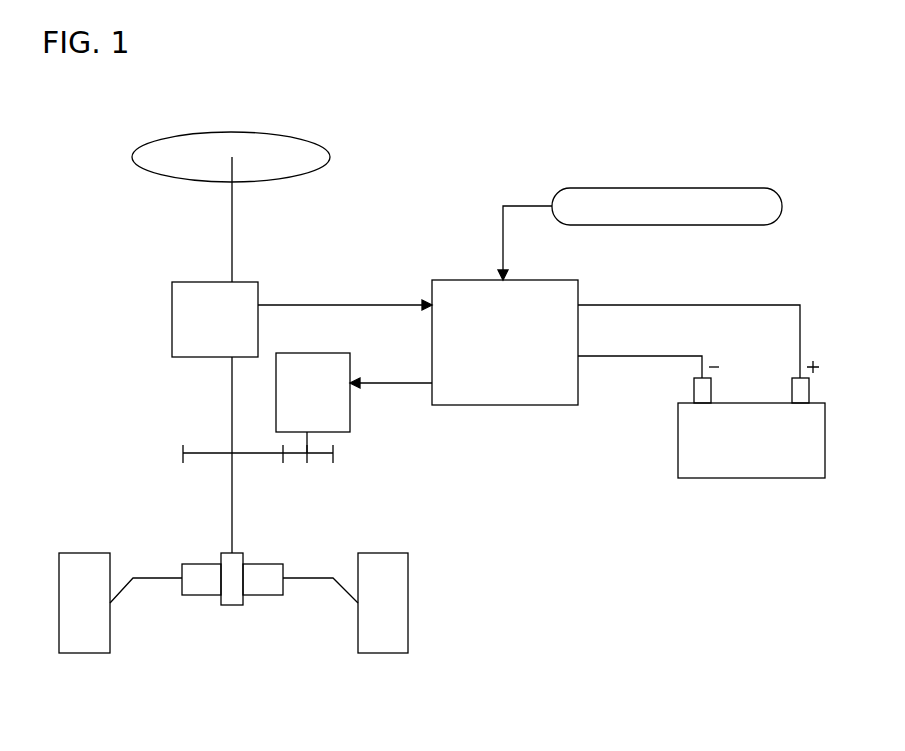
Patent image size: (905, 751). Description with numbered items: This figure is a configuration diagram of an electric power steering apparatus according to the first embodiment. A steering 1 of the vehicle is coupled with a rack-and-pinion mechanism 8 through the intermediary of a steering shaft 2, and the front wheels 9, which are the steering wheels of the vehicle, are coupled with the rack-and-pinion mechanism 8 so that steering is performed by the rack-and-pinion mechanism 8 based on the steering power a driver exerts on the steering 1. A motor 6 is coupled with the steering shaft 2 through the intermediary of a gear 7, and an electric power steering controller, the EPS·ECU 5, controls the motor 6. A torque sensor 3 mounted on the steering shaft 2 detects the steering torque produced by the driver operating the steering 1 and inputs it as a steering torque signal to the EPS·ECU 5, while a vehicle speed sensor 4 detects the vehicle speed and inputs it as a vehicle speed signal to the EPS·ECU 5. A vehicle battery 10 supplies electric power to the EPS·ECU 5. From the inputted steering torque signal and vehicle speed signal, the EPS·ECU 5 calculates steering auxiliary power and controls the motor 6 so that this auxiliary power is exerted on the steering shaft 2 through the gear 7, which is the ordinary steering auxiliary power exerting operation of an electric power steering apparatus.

The steering 1 is at (310, 142).
The steering shaft 2 is at (232, 247).
The torque sensor 3 is at (258, 283).
The vehicle speed sensor 4 is at (638, 188).
The electric power steering controller (EPS·ECU) 5 is at (556, 405).
The motor 6 is at (350, 405).
The gear 7 is at (283, 465).
The rack-and-pinion mechanism 8 is at (245, 604).
The front wheels 9 is at (83, 655).
The vehicle battery 10 is at (732, 478).